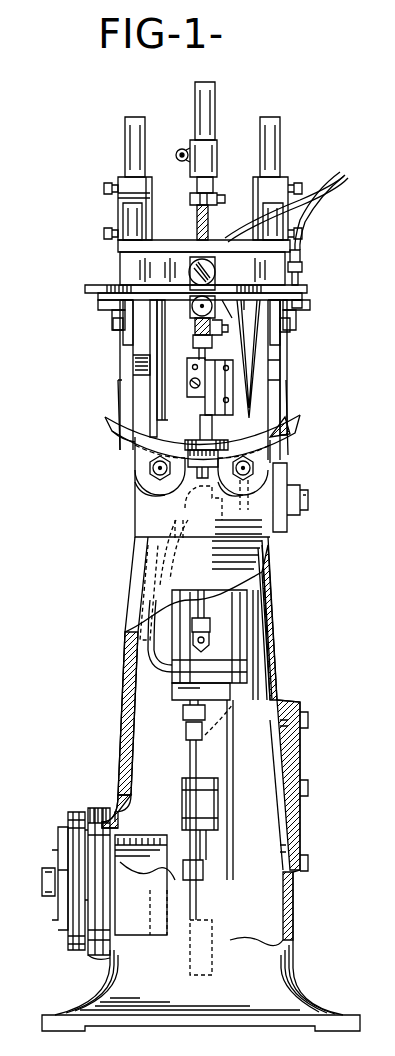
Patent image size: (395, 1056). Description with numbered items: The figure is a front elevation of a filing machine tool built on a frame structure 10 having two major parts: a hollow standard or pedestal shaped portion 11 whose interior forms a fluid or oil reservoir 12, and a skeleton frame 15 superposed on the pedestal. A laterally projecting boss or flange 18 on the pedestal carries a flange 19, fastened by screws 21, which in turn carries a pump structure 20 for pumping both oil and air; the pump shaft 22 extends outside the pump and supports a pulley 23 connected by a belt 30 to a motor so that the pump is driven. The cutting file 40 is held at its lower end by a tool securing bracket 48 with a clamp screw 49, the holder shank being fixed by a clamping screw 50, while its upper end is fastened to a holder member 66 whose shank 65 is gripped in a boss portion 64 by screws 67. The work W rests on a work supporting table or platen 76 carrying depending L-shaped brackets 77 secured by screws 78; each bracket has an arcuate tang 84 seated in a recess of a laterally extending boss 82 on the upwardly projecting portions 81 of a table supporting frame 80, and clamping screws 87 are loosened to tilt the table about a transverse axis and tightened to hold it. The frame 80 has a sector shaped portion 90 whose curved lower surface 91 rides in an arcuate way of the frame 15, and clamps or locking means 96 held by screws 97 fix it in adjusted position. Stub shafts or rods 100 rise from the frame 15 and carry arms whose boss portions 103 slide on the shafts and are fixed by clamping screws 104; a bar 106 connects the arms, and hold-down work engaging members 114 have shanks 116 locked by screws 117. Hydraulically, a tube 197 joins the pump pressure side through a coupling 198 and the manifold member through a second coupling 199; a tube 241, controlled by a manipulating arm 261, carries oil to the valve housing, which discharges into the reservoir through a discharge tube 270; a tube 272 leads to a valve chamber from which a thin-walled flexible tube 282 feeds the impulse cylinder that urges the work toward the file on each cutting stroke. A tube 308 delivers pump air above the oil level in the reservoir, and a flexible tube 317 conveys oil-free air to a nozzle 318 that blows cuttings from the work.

The frame structure 10 is at (124, 603).
The pedestal shaped portion 11 is at (294, 918).
The oil reservoir 12 is at (286, 884).
The skeleton frame 15 is at (278, 460).
The boss or flange 18 is at (122, 800).
The flange 19 is at (100, 958).
The pump structure 20 is at (136, 828).
The screws 21 is at (95, 815).
The pump shaft 22 is at (42, 882).
The pulley 23 is at (70, 925).
The belt 30 is at (95, 952).
The cutting file 40 is at (215, 225).
The tool securing bracket 48 is at (194, 340).
The clamp screw 49 is at (244, 340).
The clamping screw 50 is at (190, 380).
The boss portion 64 is at (218, 152).
The shank 65 is at (214, 118).
The holder member 66 is at (218, 193).
The screws 67 is at (180, 150).
The work supporting table 76 is at (100, 285).
The L-shaped brackets 77 is at (100, 308).
The screws 78 is at (112, 320).
The table supporting frame 80 is at (140, 405).
The upwardly projecting portions 81 is at (150, 372).
The bosses 82 is at (133, 365).
The arcuate tang 84 is at (124, 324).
The clamping screw 87 is at (126, 338).
The sector shaped portion 90 is at (300, 430).
The curved lower surface 91 is at (120, 440).
The clamps 96 is at (152, 470).
The screws 97 is at (235, 475).
The stub shafts 100 is at (125, 142).
The boss portion 103 is at (120, 186).
The clamping screws 104 is at (112, 212).
The bar 106 is at (173, 240).
The work engaging members 114 is at (110, 238).
The shank 116 is at (104, 188).
The screws 117 is at (152, 205).
The tube 197 is at (186, 785).
The coupling 198 is at (220, 866).
The second coupling 199 is at (186, 718).
The tube 241 is at (246, 612).
The manipulating arm 261 is at (305, 492).
The fluid discharge tube 270 is at (250, 592).
The tube 272 is at (150, 660).
The tube 282 is at (302, 296).
The tube 308 is at (274, 690).
The tube 317 is at (338, 185).
The nozzle 318 is at (243, 270).
The work W is at (302, 264).